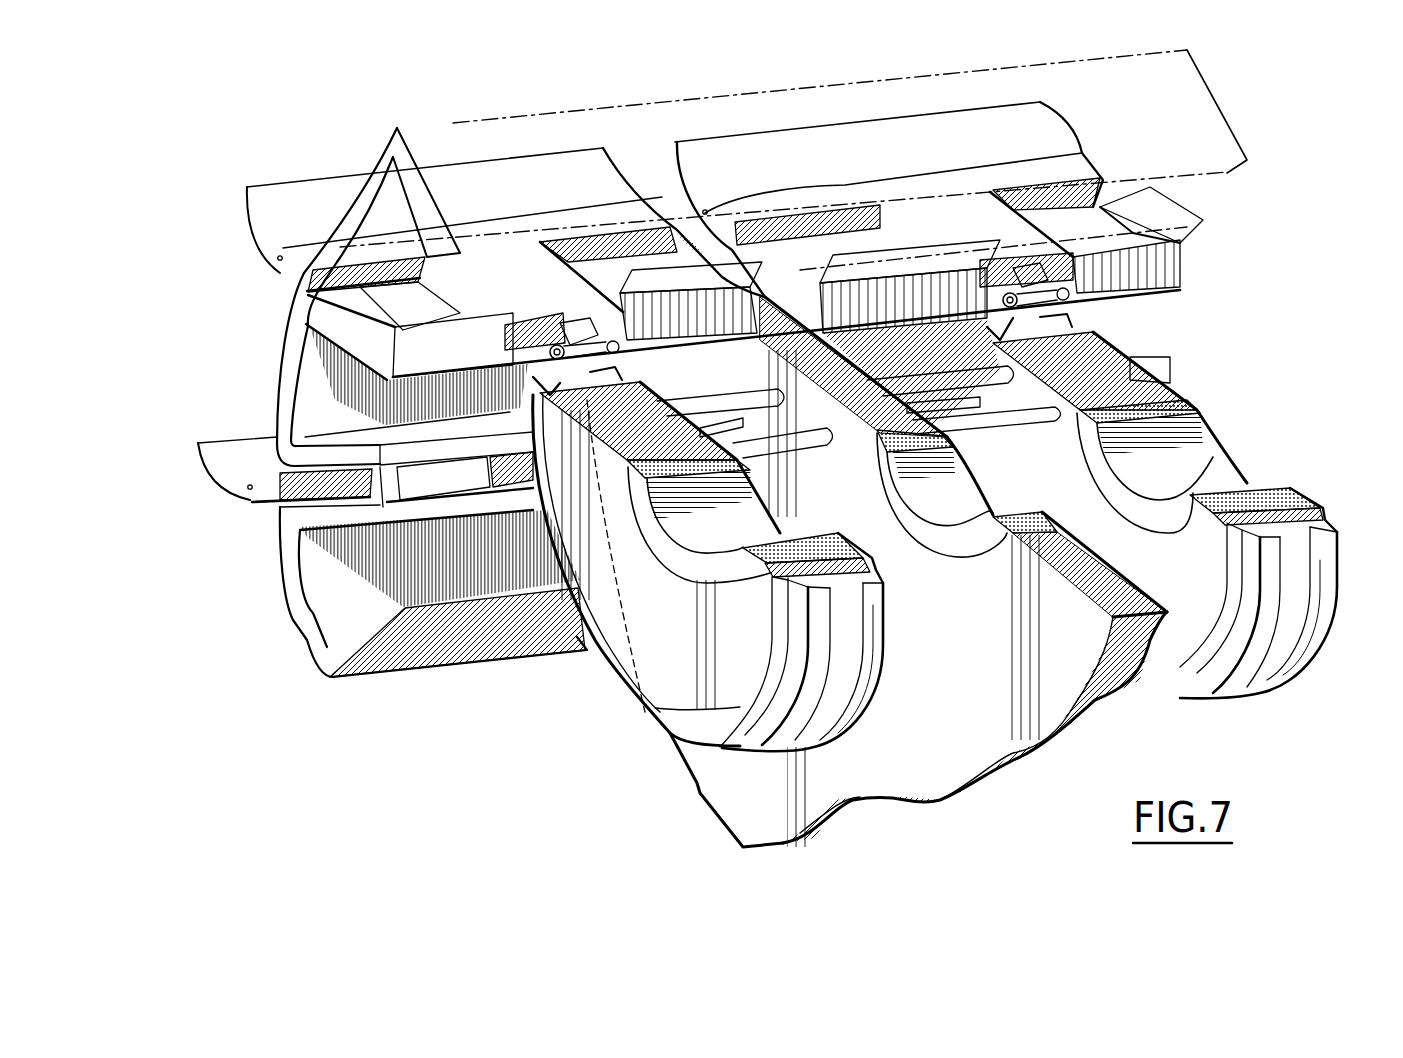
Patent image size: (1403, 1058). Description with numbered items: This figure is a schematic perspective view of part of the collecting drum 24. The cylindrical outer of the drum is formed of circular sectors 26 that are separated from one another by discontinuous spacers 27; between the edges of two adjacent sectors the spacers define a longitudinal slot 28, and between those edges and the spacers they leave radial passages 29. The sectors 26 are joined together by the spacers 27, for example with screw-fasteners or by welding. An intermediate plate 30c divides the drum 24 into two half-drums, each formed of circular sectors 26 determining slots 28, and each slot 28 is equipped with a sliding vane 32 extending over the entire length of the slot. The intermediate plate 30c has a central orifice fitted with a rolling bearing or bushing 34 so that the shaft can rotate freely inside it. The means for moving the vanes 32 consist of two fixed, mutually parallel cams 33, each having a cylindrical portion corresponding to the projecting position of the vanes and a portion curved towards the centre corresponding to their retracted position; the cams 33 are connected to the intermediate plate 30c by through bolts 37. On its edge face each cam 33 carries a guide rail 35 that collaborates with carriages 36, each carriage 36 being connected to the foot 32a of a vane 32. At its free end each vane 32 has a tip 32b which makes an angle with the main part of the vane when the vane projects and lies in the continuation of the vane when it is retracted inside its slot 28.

The collecting drum 24 is at (357, 688).
The circular sectors 26 is at (383, 150).
The spacers 27 is at (395, 340).
The longitudinal slot 28 is at (310, 310).
The radial passages 29 is at (628, 298).
The intermediate plate 30c is at (930, 782).
The sliding vanes 32 is at (1077, 165).
The foot 32a is at (514, 290).
The tip 32b is at (280, 188).
The fixed cam 33 is at (665, 680).
The bushing 34 is at (818, 540).
The guide rail 35 is at (740, 736).
The carriages 36 is at (590, 318).
The through bolts 37 is at (718, 398).